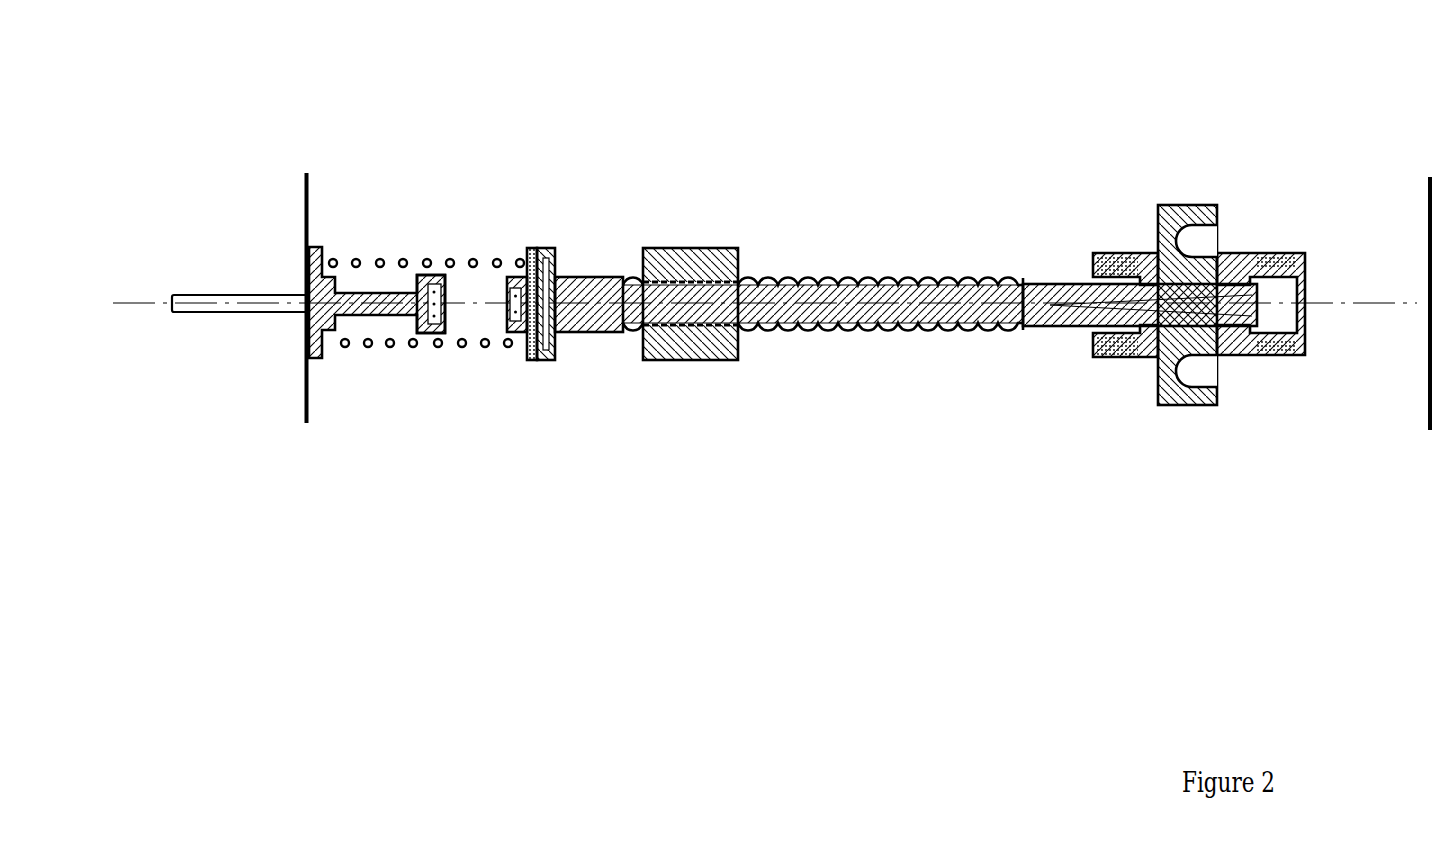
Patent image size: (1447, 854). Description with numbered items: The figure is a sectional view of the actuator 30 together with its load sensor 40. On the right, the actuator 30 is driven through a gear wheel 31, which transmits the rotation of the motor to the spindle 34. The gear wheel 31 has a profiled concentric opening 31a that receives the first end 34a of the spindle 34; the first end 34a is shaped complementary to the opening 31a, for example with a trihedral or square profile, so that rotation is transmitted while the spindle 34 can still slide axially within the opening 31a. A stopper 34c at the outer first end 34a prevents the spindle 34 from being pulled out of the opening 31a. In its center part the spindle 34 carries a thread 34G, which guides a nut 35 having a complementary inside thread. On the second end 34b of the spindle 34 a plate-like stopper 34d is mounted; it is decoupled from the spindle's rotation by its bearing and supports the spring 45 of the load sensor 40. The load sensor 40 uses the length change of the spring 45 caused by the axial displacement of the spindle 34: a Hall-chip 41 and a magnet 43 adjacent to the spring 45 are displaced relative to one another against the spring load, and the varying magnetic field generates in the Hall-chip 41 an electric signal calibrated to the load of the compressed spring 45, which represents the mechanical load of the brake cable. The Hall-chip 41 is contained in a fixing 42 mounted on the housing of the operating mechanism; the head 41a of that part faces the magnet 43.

The actuator 30 is at (771, 357).
The gear wheel 31 is at (1183, 205).
The profiled concentric opening 31a is at (1226, 342).
The spindle 34 is at (897, 331).
The first end of the spindle 34a is at (1047, 326).
The second end of the spindle 34b is at (590, 332).
The stopper 34c is at (1267, 355).
The plate-like stopper 34d is at (556, 258).
The thread 34G is at (780, 275).
The nut 35 is at (689, 360).
The load sensor 40 is at (315, 402).
The Hall-chip 41 is at (377, 307).
The piston head 41a is at (390, 293).
The fixing 42 is at (523, 333).
The magnet 43 is at (518, 260).
The spring 45 is at (452, 258).